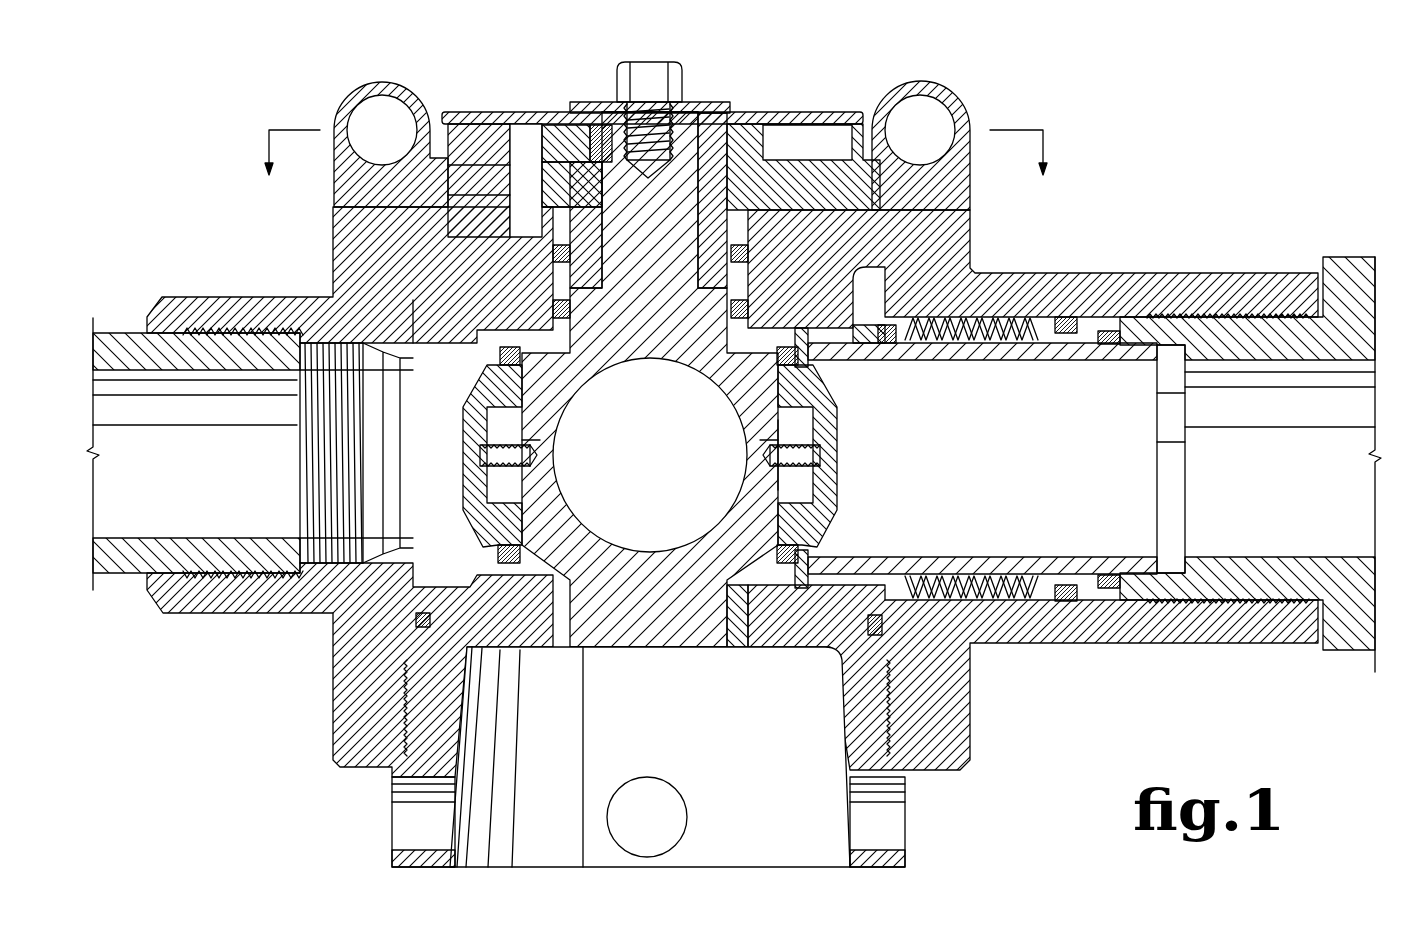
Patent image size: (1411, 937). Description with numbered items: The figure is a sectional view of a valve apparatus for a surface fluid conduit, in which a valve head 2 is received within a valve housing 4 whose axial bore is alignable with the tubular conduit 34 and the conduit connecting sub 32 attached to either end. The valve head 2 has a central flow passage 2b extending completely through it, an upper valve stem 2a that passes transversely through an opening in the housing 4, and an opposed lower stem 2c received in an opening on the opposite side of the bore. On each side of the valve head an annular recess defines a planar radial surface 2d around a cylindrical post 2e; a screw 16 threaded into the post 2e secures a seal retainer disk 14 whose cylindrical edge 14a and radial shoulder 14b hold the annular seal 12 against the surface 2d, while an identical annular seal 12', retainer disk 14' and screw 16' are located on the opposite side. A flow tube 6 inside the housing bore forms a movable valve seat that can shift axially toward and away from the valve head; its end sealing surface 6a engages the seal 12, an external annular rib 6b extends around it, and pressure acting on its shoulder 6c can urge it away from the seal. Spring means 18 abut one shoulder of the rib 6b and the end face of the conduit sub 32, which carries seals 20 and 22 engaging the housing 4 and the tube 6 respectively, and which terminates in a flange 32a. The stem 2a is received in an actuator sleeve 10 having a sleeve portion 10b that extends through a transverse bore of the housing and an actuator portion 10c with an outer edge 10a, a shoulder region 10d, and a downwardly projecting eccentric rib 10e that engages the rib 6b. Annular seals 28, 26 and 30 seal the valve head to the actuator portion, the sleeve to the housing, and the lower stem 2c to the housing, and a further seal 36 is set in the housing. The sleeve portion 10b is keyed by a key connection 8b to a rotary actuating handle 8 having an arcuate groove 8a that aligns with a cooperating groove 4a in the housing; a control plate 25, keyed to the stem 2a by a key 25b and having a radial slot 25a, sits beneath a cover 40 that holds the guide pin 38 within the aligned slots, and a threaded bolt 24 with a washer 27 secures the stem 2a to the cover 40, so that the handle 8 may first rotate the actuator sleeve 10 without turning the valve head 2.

The valve head 2 is at (640, 647).
The valve stem 2a is at (657, 225).
The central flow passage 2b is at (697, 537).
The opposed stem 2c is at (685, 632).
The planar radial surface 2d is at (535, 448).
The cylindrical post 2e is at (802, 437).
The valve housing 4 is at (345, 277).
The arcuate groove 4a is at (545, 210).
The flow tube 6 is at (980, 358).
The end sealing surface 6a is at (848, 337).
The external annular rib 6b is at (893, 362).
The shoulder 6c is at (825, 600).
The rotary actuating handle 8 is at (990, 184).
The arcuate groove 8a is at (543, 185).
The key connection 8b is at (543, 170).
The actuator sleeve 10 is at (880, 290).
The outer edge 10a is at (885, 308).
The sleeve portion 10b is at (807, 142).
The actuator portion 10c is at (893, 262).
The bonnet inner shoulder 10d is at (855, 348).
The eccentric rib 10e is at (858, 322).
The annular seal 12 is at (850, 480).
The annular valve seal 12' is at (479, 455).
The seal retainer disk 14 is at (835, 456).
The seal retainer disk 14' is at (473, 456).
The cylindrical edge 14a is at (780, 355).
The radial shoulder 14b is at (780, 560).
The screw 16 is at (827, 463).
The screw 16' is at (479, 449).
The spring means 18 is at (1030, 332).
The seal 20 is at (1068, 325).
The seal 22 is at (1105, 345).
The threaded bolt 24 is at (640, 68).
The control plate 25 is at (580, 140).
The radial slot 25a is at (530, 128).
The key 25b is at (600, 130).
The annular seal 26 is at (748, 254).
The washer 27 is at (703, 108).
The annular seal 28 is at (731, 309).
The annular seal 30 is at (745, 605).
The conduit connecting sub 32 is at (1265, 573).
The pipe flange 32a is at (1163, 560).
The tubular conduit 34 is at (124, 348).
The O-ring seal 36 is at (420, 615).
The guide pin 38 is at (498, 138).
The cover 40 is at (475, 118).